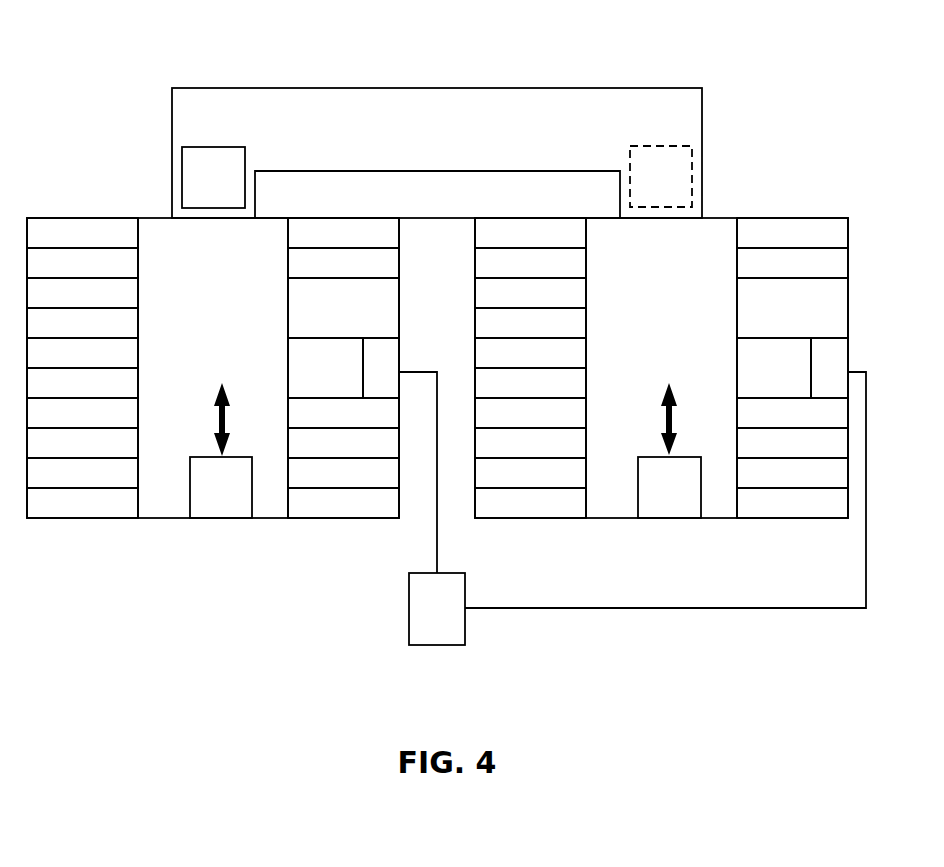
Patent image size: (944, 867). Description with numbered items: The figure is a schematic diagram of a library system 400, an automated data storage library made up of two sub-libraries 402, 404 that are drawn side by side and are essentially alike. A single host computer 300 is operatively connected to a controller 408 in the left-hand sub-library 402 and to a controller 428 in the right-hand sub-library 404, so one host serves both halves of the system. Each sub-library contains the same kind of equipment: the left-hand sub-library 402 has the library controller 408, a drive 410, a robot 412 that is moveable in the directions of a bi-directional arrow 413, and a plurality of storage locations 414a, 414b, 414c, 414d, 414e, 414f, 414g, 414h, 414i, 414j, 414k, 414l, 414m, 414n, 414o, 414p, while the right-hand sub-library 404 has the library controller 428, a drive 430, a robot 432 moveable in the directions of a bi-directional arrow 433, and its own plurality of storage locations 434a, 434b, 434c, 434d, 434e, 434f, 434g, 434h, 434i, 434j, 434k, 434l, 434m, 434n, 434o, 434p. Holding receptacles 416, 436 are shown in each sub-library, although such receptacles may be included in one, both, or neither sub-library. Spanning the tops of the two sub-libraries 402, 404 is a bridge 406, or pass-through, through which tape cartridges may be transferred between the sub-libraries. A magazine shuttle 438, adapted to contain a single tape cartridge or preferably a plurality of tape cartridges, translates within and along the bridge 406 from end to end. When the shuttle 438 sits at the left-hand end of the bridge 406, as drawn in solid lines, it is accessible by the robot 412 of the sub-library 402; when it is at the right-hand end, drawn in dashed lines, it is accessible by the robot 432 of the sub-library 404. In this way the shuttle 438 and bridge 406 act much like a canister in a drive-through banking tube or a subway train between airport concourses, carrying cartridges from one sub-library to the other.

The library system 400 is at (420, 33).
The sub-library 402 is at (129, 178).
The sub-library 404 is at (749, 178).
The bridge 406 is at (483, 88).
The library controller 408 is at (381, 368).
The drive 410 is at (325, 368).
The robot 412 is at (221, 487).
The bi-directional arrow 413 is at (223, 423).
The storage location 414a is at (82, 233).
The storage location 414b is at (82, 263).
The storage location 414c is at (82, 293).
The storage location 414d is at (82, 323).
The storage location 414e is at (82, 353).
The storage location 414f is at (82, 383).
The storage location 414g is at (82, 413).
The storage location 414h is at (82, 443).
The storage location 414i is at (82, 473).
The storage location 414j is at (82, 503).
The storage location 414k is at (343, 233).
The storage location 414l is at (343, 263).
The storage location 414m is at (343, 413).
The storage location 414n is at (343, 443).
The storage location 414o is at (343, 473).
The storage location 414p is at (343, 503).
The holding receptacle 416 is at (343, 308).
The library controller 428 is at (829, 368).
The drive 430 is at (774, 368).
The robot 432 is at (669, 487).
The bi-directional arrow 433 is at (673, 425).
The storage location 434a is at (530, 233).
The storage location 434b is at (530, 263).
The storage location 434c is at (530, 293).
The storage location 434d is at (530, 323).
The storage location 434e is at (530, 353).
The storage location 434f is at (530, 383).
The storage location 434g is at (530, 413).
The storage location 434h is at (530, 443).
The storage location 434i is at (530, 473).
The storage location 434j is at (530, 503).
The storage location 434k is at (792, 233).
The storage location 434l is at (792, 263).
The storage location 434m is at (792, 413).
The storage location 434n is at (792, 443).
The storage location 434o is at (792, 473).
The storage location 434p is at (792, 503).
The holding receptacle 436 is at (792, 308).
The magazine shuttle 438 is at (692, 173).
The host computer 300 is at (632, 508).